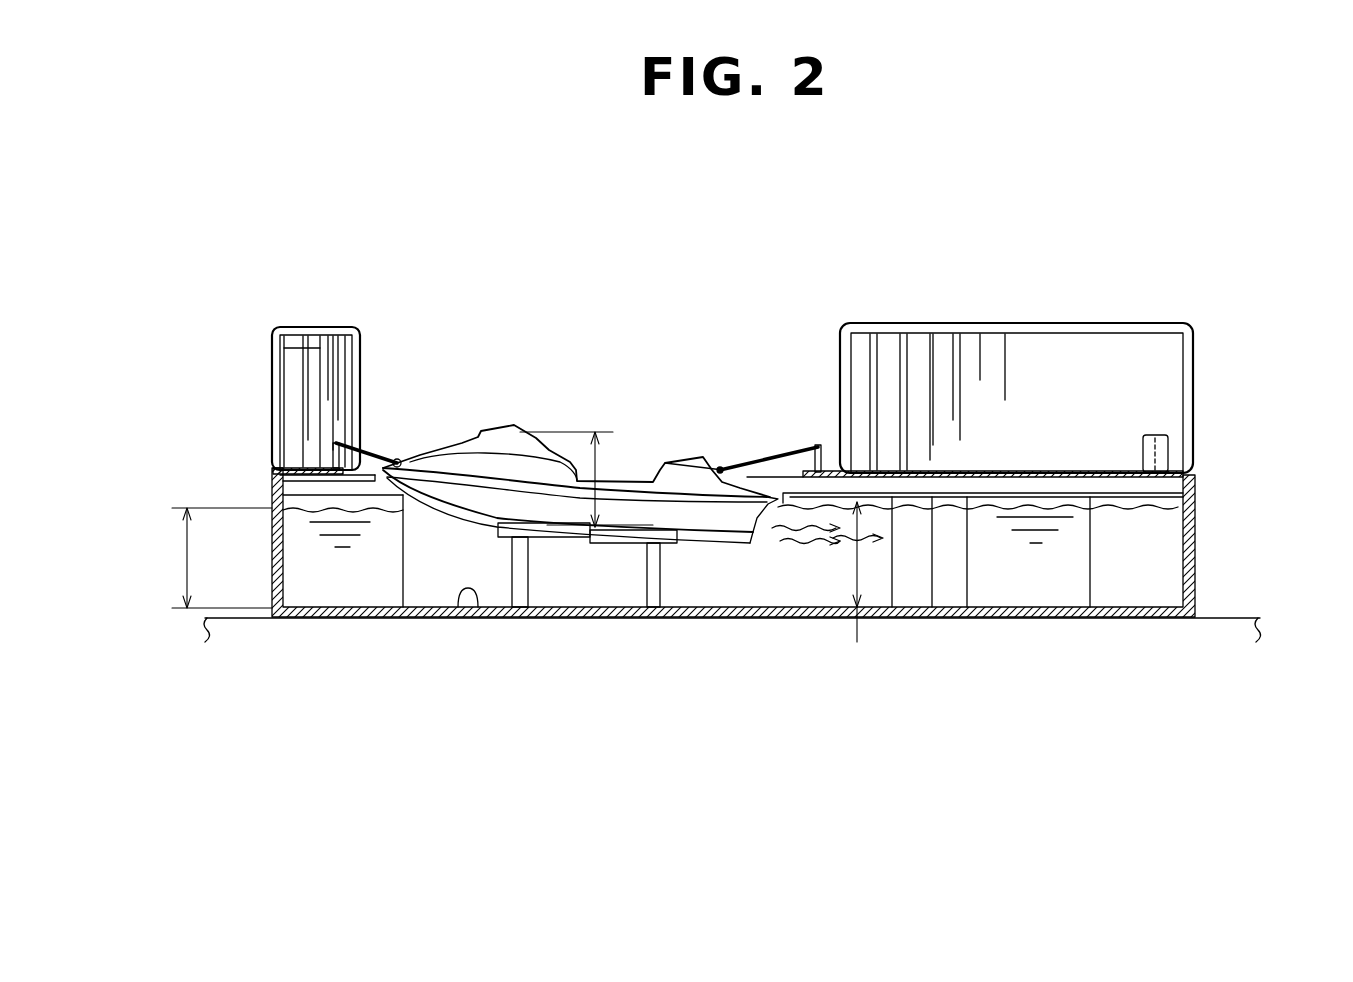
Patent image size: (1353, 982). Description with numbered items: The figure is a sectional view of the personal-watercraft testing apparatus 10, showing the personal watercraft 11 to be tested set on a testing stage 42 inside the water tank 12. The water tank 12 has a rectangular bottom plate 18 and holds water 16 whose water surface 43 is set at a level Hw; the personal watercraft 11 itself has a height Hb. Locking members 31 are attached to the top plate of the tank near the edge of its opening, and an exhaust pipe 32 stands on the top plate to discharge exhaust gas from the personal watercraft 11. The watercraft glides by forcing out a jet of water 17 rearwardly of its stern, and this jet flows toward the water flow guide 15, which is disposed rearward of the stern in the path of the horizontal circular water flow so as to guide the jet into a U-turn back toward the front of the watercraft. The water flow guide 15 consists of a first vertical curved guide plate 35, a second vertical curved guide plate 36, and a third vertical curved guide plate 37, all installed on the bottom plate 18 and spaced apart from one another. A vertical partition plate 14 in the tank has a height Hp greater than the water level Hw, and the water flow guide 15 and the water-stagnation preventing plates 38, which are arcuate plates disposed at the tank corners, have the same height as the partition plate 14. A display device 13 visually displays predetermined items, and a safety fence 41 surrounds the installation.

The personal-watercraft testing apparatus 10 is at (350, 195).
The personal watercraft 11 is at (488, 415).
The water tank 12 is at (376, 350).
The display device 13 is at (292, 338).
The vertical partition plate 14 is at (795, 488).
The water flow guide 15 is at (1075, 215).
The water 16 is at (365, 515).
The jet of water 17 is at (793, 547).
The bottom plate 18 is at (463, 607).
The locking member 31 is at (345, 447).
The exhaust pipe 32 is at (1155, 435).
The first vertical curved guide plate 35 is at (915, 493).
The second vertical curved guide plate 36 is at (958, 493).
The third vertical curved guide plate 37 is at (1020, 493).
The water-stagnation preventing plate 38 is at (335, 468).
The safety fence 41 is at (1205, 340).
The testing stage 42 is at (640, 582).
The water surface 43 is at (285, 484).